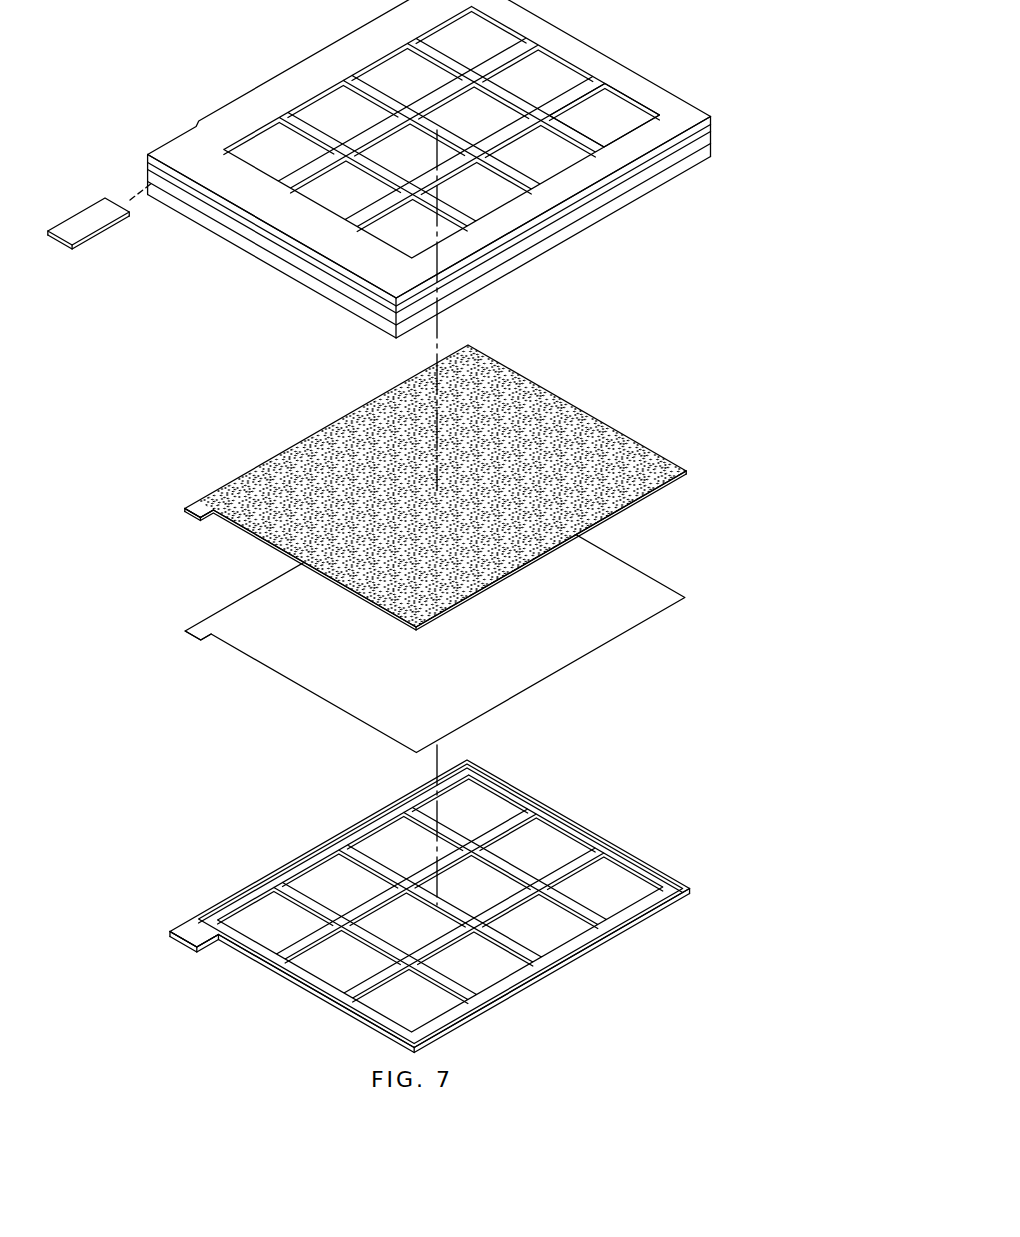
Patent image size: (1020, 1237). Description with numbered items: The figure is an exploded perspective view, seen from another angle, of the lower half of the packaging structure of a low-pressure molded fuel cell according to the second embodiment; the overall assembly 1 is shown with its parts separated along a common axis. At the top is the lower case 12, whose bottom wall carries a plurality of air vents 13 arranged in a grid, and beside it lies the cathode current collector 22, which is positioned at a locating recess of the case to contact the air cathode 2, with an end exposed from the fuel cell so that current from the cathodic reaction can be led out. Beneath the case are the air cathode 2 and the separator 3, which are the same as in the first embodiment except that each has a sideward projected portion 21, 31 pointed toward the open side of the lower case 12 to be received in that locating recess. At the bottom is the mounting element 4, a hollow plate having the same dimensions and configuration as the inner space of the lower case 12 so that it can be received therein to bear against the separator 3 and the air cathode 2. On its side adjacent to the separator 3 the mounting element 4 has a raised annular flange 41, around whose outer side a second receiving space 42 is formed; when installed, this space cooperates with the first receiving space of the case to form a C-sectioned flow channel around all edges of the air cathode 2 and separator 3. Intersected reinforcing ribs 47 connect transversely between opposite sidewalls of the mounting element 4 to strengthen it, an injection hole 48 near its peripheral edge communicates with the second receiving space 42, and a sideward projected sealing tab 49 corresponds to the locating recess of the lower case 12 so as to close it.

The upper frame 1 is at (398, 169).
The lower case 12 is at (625, 80).
The air vents 13 is at (545, 155).
The cathode current collector 22 is at (85, 225).
The air cathode 2 is at (587, 443).
The sideward projected portion 21 is at (200, 513).
The separator 3 is at (613, 578).
The sideward projected portion 31 is at (195, 636).
The mounting element 4 is at (436, 906).
The raised annular flange 41 is at (648, 913).
The second receiving space 42 is at (662, 900).
The reinforcing ribs 47 is at (372, 937).
The injection hole 48 is at (542, 963).
The sealing tab 49 is at (185, 928).